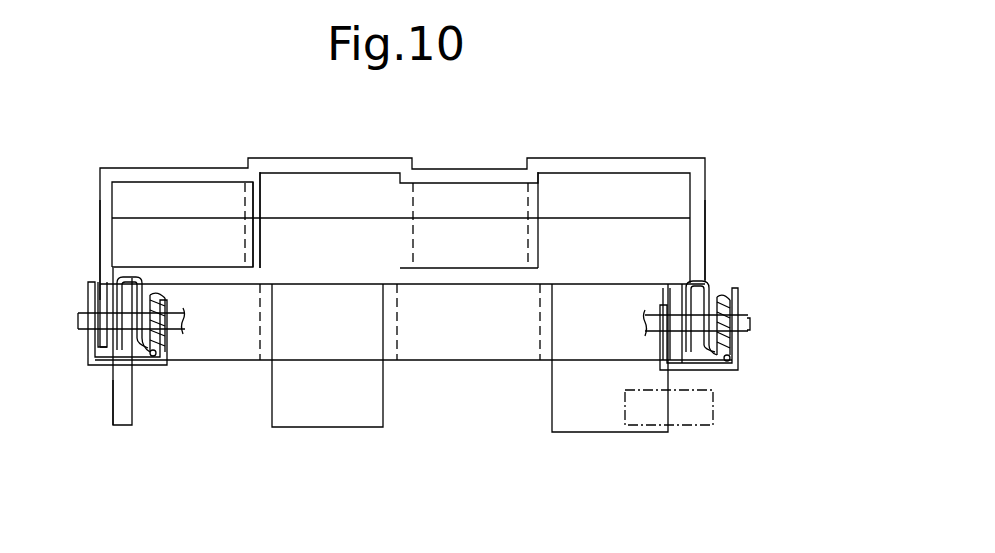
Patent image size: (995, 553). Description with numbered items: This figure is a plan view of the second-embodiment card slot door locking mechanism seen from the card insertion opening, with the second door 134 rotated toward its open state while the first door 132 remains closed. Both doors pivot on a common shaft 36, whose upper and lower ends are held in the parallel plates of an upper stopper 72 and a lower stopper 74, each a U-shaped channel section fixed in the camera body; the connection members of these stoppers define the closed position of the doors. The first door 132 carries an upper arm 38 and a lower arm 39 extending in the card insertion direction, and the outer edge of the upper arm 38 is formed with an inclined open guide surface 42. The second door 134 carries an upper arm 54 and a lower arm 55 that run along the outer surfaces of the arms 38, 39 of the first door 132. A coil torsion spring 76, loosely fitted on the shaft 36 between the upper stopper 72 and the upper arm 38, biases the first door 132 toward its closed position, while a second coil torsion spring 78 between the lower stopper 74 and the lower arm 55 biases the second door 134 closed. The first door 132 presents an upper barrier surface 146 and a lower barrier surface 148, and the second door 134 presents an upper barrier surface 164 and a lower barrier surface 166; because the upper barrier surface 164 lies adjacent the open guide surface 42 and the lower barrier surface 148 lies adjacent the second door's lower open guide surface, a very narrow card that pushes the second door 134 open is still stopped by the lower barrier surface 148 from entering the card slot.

The second door 134 is at (712, 194).
The upper arm 54 is at (100, 240).
The lower arm 55 is at (706, 232).
The upper barrier surface 164 is at (243, 250).
The lower barrier surface 166 is at (515, 251).
The upper barrier surface 146 is at (383, 406).
The lower barrier surface 148 is at (552, 408).
The upper stopper 72 is at (93, 367).
The lower stopper 74 is at (740, 366).
The shaft 36 is at (88, 315).
The upper arm 38 is at (128, 292).
The lower arm 39 is at (678, 298).
The open guide surface 42 is at (128, 423).
The first door 132 is at (112, 400).
The coil torsion spring 76 is at (146, 358).
The coil torsion spring 78 is at (705, 352).